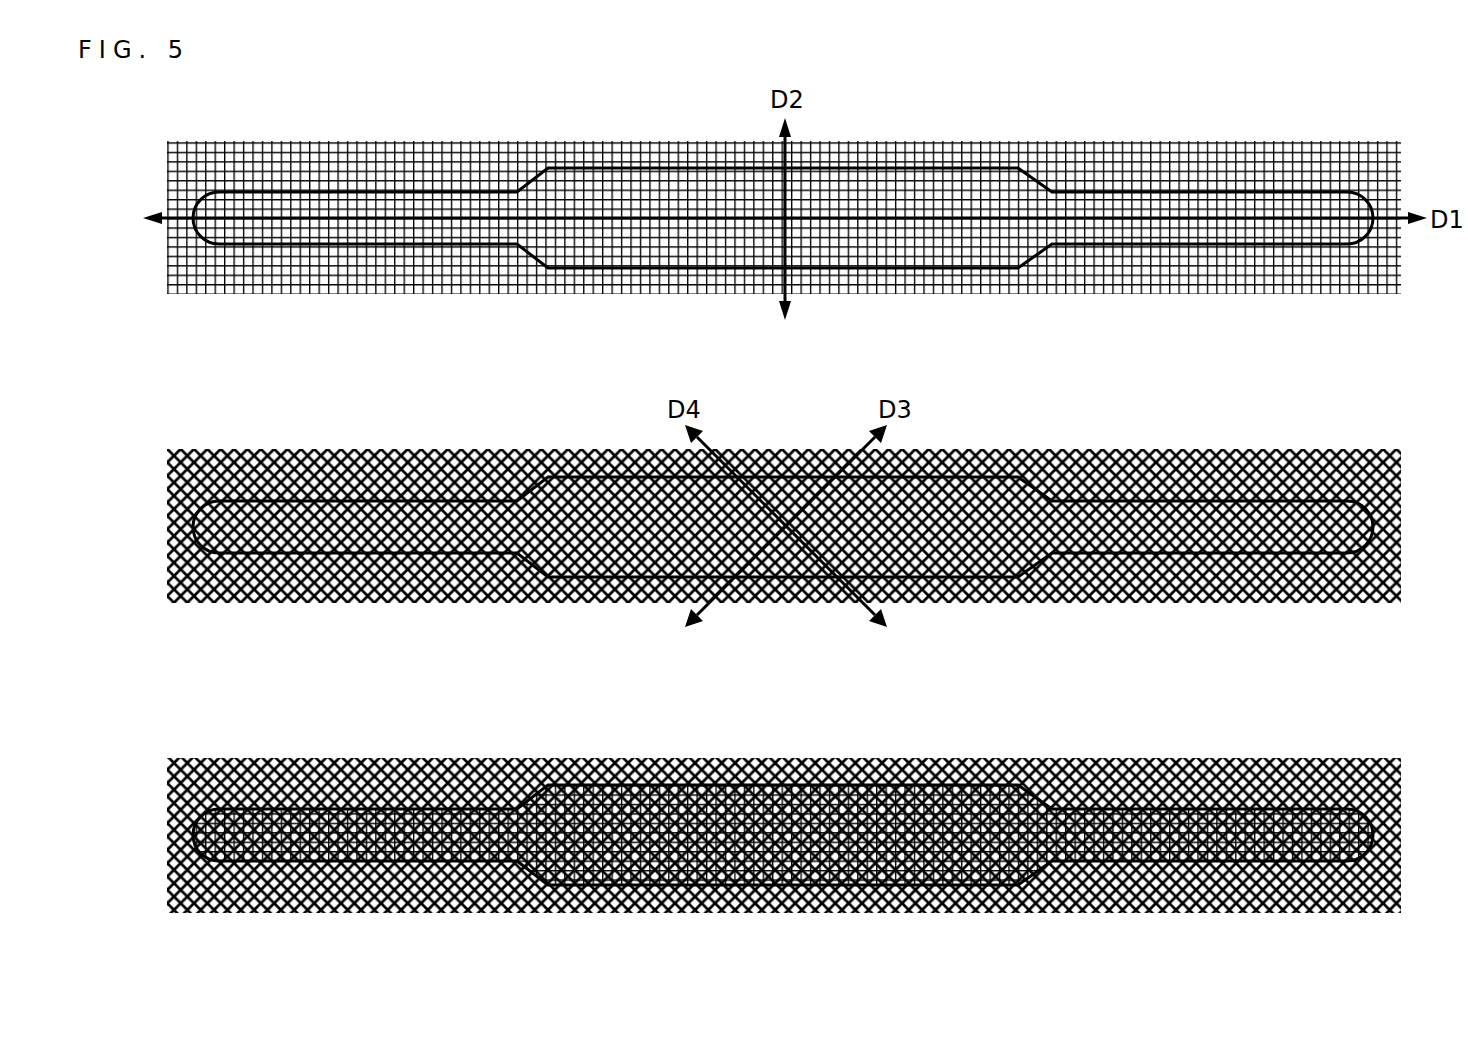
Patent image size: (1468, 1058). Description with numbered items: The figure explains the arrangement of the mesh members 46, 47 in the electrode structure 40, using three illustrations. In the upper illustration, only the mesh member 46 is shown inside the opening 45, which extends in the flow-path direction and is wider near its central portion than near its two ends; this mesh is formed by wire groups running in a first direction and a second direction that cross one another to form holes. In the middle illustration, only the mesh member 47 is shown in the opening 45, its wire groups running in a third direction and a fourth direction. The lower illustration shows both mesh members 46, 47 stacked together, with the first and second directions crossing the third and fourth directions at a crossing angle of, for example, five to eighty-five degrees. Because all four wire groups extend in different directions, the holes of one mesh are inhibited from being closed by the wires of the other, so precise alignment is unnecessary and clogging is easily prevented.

The electrode structure 40 is at (771, 489).
The opening 45 is at (1103, 208).
The mesh member 46 is at (1237, 141).
The mesh member 47 is at (1237, 449).